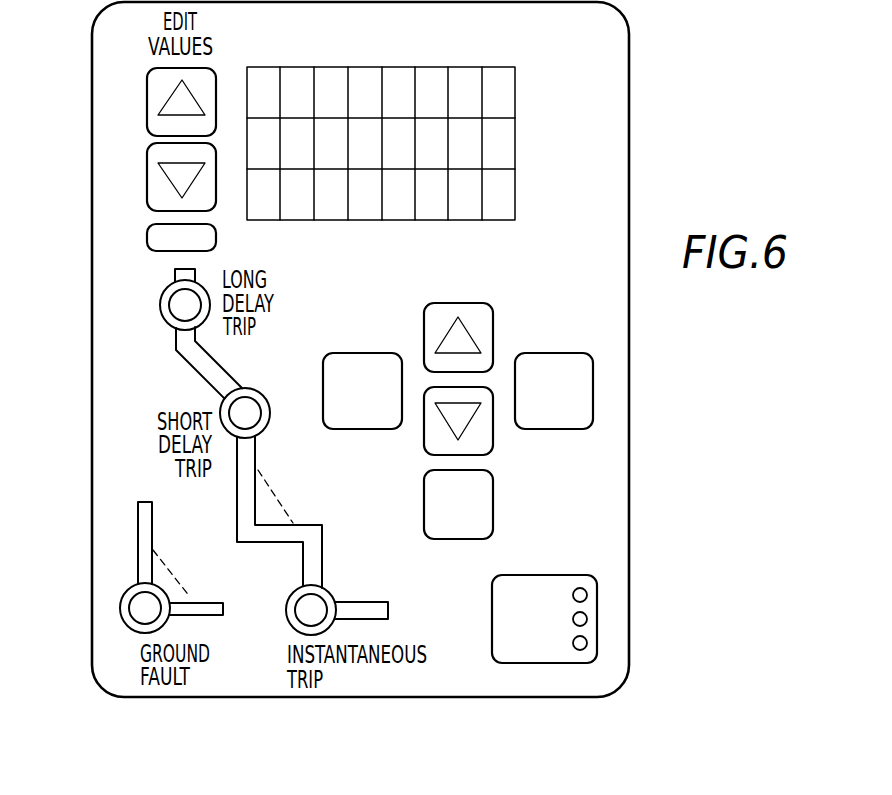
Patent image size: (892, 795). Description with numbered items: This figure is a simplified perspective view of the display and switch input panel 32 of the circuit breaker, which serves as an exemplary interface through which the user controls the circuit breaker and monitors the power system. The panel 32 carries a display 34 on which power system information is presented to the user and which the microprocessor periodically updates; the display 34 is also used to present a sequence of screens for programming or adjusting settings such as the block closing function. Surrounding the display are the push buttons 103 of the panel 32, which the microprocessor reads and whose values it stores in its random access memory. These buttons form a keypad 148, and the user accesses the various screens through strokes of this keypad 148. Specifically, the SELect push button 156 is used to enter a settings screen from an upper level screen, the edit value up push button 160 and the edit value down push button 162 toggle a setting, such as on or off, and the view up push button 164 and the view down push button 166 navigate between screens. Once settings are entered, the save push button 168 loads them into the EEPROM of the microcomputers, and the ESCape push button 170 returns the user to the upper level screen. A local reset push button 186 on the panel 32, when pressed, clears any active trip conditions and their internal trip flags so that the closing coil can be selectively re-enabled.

The display and switch input panel 32 is at (386, 367).
The display 34 is at (472, 130).
The push buttons 103 is at (467, 655).
The keypad 148 is at (595, 487).
The SELect push button 156 is at (573, 353).
The edit value (up) push button 160 is at (146, 104).
The edit value (down) push button 162 is at (146, 179).
The view up push button 164 is at (472, 303).
The view down push button 166 is at (424, 452).
The save push button 168 is at (147, 238).
The ESCape push button 170 is at (370, 353).
The local reset push button 186 is at (493, 517).